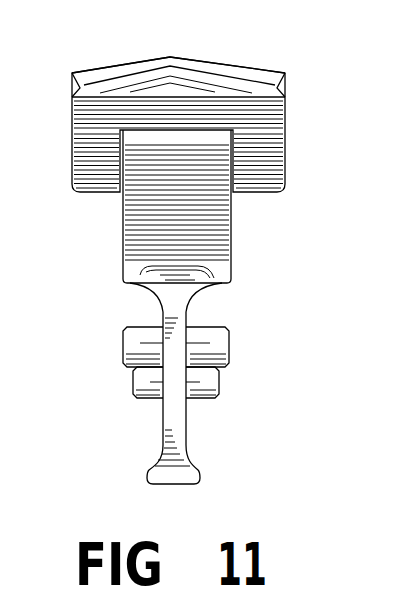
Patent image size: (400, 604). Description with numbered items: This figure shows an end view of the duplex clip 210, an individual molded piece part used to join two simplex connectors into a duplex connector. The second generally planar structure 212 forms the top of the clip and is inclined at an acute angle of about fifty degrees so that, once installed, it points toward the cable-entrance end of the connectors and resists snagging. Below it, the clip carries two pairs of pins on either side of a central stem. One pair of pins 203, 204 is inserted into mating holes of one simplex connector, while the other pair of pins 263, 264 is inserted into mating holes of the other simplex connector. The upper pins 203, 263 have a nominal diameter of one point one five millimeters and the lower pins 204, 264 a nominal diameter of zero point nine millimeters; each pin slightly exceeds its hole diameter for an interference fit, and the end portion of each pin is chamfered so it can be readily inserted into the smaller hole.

The duplex clip 210 is at (295, 62).
The second generally planar structure 212 is at (96, 70).
The pin 203 is at (145, 330).
The pin 263 is at (205, 330).
The pin 204 is at (143, 398).
The pin 264 is at (206, 398).